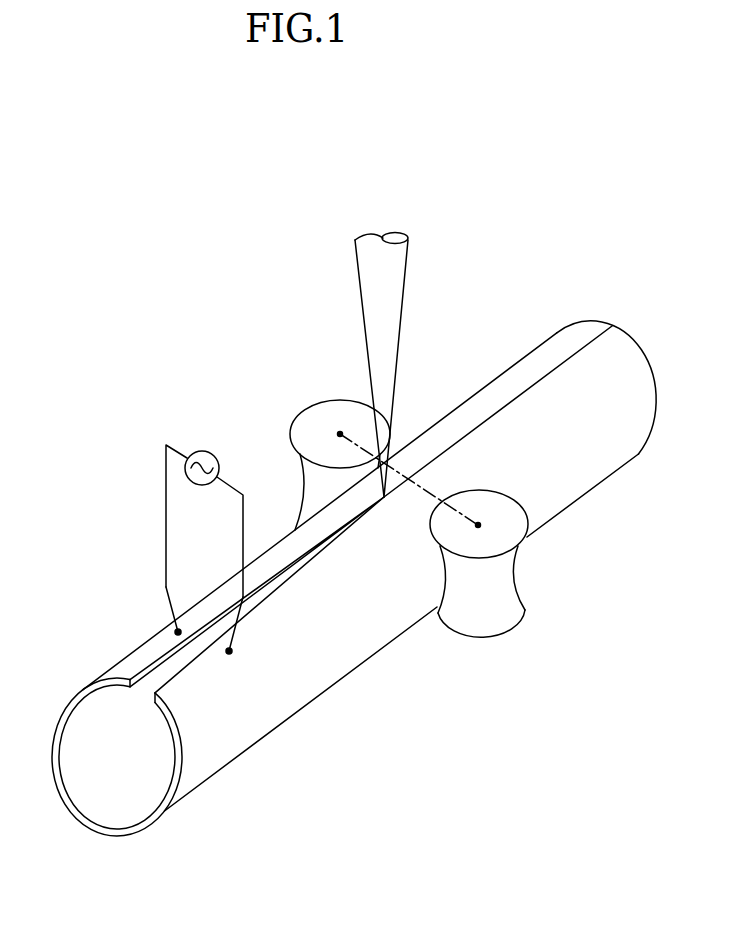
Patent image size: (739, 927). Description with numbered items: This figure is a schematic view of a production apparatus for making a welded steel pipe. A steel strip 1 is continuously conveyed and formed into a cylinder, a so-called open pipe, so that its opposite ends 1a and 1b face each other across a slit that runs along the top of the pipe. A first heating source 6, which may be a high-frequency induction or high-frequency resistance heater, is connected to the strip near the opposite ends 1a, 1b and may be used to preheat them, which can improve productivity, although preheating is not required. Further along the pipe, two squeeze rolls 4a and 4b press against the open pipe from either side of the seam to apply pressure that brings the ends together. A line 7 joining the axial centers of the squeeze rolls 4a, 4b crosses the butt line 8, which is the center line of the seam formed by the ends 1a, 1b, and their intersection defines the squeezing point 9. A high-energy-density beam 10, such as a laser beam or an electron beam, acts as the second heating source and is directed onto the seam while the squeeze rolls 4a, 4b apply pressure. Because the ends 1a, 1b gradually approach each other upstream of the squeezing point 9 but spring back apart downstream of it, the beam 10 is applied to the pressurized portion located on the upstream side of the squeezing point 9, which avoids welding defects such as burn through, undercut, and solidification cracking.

The steel strip 1 is at (242, 720).
The end of steel strip 1a is at (279, 573).
The end of steel strip 1b is at (277, 598).
The squeeze roll 4a is at (325, 418).
The squeeze roll 4b is at (510, 528).
The first heating source 6 is at (165, 505).
The line joining axial centers of squeeze rolls 7 is at (453, 513).
The butt line 8 is at (368, 513).
The squeezing point 9 is at (414, 483).
The high-energy-density beam 10 is at (388, 288).